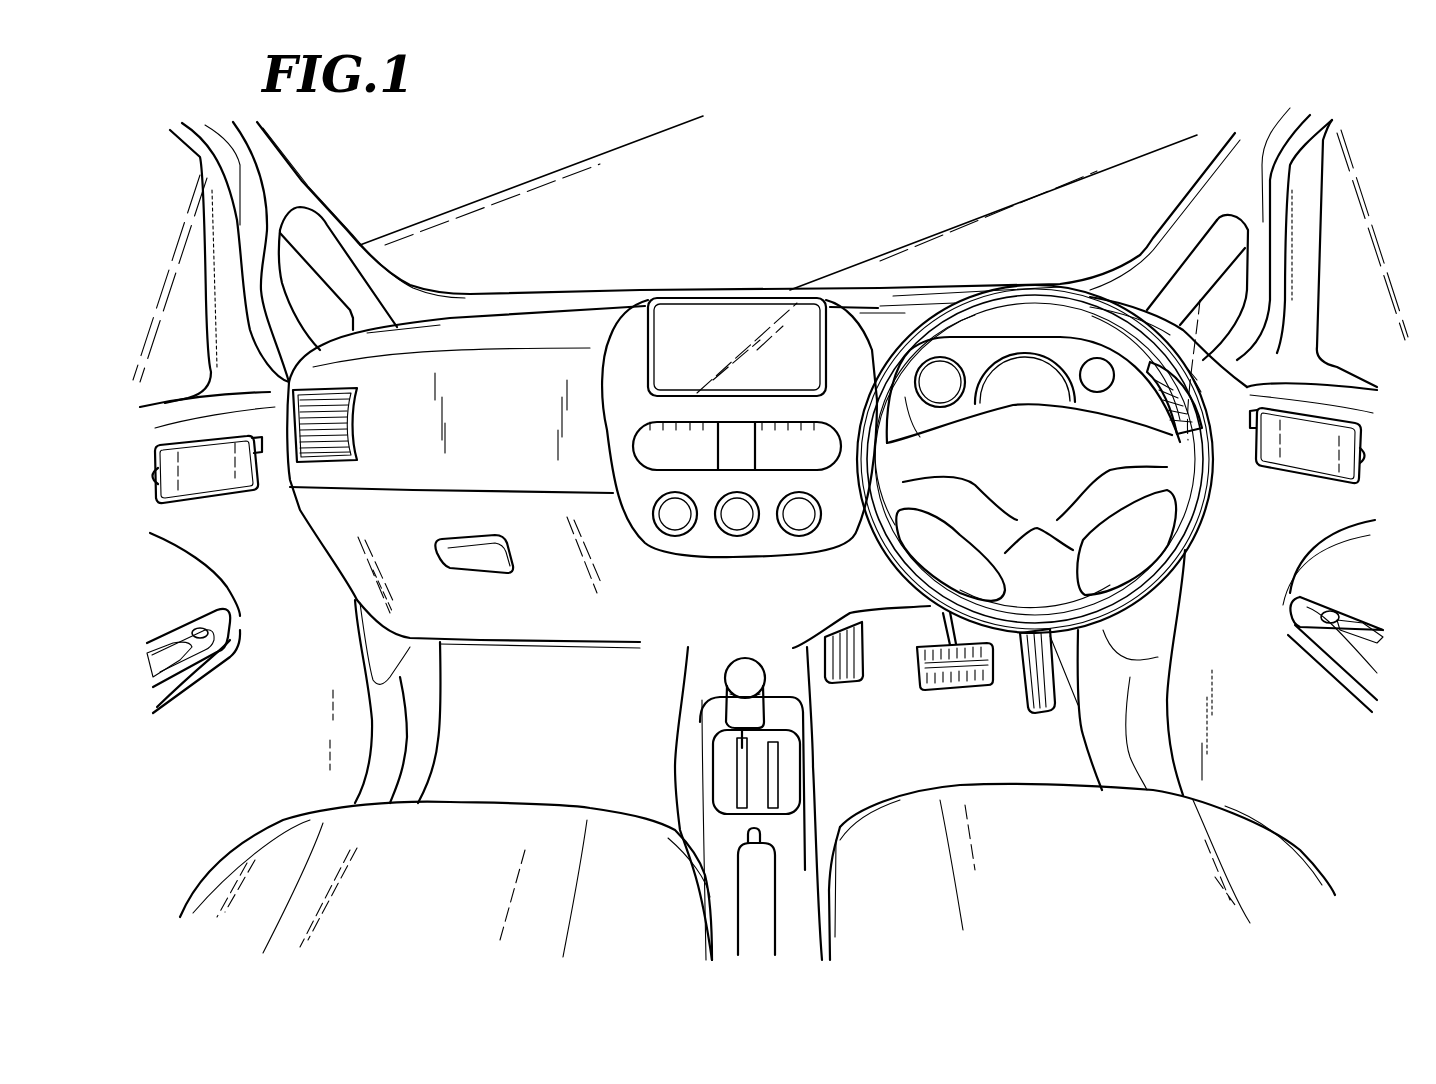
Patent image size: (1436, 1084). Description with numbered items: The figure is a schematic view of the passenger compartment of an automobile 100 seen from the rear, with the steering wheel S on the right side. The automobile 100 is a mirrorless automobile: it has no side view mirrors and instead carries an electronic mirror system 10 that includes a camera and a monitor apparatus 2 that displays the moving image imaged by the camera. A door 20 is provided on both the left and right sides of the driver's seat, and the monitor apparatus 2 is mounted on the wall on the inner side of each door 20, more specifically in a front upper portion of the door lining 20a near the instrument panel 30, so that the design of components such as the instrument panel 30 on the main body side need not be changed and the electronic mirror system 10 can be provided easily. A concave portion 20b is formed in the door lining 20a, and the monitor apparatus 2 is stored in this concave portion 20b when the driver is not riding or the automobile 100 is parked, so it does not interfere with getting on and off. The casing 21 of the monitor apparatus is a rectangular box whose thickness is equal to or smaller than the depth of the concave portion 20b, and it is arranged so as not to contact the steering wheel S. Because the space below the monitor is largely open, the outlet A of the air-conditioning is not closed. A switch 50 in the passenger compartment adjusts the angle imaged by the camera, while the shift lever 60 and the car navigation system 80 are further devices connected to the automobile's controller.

The automobile 100 is at (848, 150).
The door 20 is at (180, 287).
The door lining 20a is at (180, 403).
The concave portion 20b is at (152, 483).
The monitor apparatus 2 is at (218, 486).
The electronic mirror system 10 is at (753, 506).
The casing 21 is at (240, 470).
The instrument panel 30 is at (540, 325).
The car navigation system 80 is at (710, 320).
The switch 50 is at (197, 628).
The shift lever 60 is at (738, 678).
The outlet of the air-conditioning A is at (352, 413).
The steering wheel S is at (893, 545).